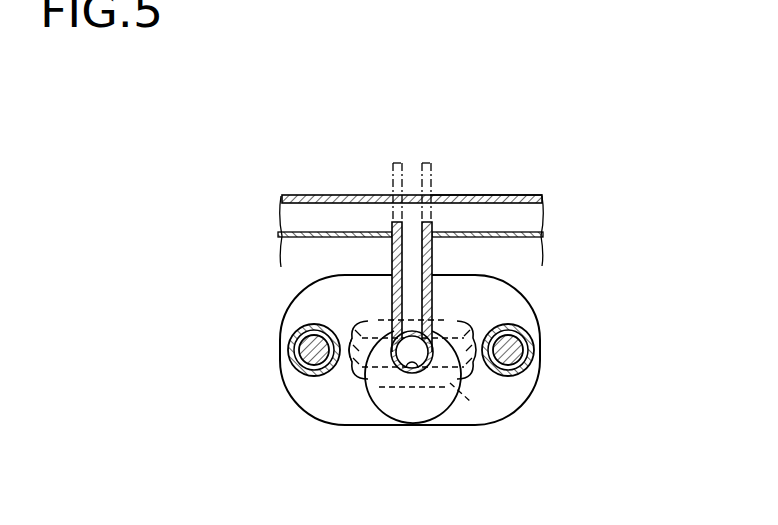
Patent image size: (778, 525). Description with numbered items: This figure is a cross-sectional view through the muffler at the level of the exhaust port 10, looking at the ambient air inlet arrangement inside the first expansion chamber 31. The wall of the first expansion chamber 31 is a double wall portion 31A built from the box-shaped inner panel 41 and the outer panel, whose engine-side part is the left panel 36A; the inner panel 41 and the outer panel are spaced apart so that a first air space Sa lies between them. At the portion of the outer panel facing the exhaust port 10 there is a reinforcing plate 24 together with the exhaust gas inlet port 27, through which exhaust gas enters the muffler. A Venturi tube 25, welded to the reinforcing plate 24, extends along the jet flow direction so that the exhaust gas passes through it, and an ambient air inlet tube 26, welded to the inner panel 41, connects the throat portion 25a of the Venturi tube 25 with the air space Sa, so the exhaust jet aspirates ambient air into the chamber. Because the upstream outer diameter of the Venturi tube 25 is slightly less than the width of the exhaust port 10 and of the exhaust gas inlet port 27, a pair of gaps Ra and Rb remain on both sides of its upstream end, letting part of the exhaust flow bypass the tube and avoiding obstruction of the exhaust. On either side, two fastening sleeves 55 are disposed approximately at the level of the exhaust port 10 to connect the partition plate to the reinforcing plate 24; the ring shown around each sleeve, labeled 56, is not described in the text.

The exhaust port 10 is at (470, 401).
The reinforcing plate 24 is at (327, 398).
The Venturi tube 25 is at (405, 400).
The throat portion 25a is at (431, 373).
The ambient air inlet tube 26 is at (392, 252).
The exhaust gas inlet port 27 is at (356, 383).
The first expansion chamber 31 is at (455, 263).
The double wall portion 31A is at (331, 194).
The left panel 36A is at (487, 195).
The inner panel 41 is at (518, 234).
The fastening sleeve 55 is at (290, 362).
The collar 56 is at (290, 340).
The first air space Sa is at (310, 218).
The gap Ra is at (353, 328).
The gap Rb is at (466, 328).